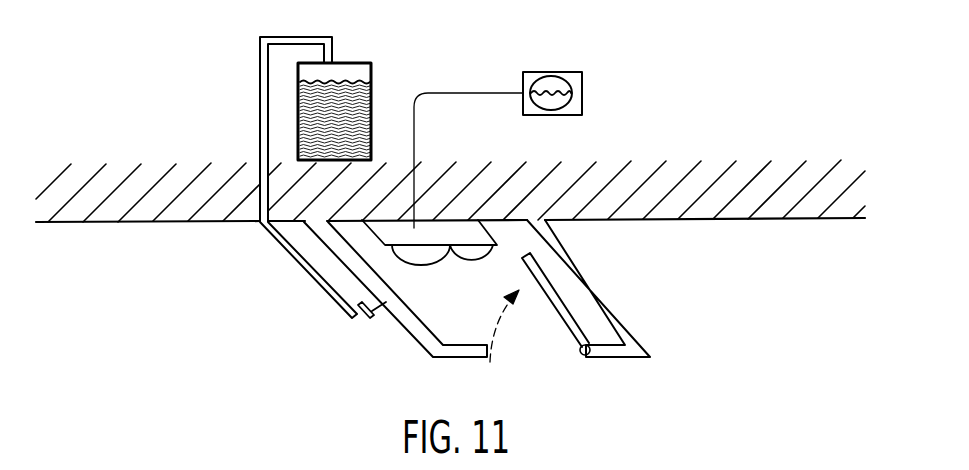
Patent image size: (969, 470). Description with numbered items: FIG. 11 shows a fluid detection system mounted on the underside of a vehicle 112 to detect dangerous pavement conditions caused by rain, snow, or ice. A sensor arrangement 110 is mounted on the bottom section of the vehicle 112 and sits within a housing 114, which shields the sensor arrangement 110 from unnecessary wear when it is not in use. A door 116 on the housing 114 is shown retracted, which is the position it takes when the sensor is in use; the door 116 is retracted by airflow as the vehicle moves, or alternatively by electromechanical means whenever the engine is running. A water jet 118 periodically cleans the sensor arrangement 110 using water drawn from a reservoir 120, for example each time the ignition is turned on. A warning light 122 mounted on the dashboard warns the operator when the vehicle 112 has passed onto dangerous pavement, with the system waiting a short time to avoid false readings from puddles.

The sensor arrangement 110 is at (438, 230).
The vehicle 112 is at (575, 175).
The housing 114 is at (323, 302).
The door 116 is at (560, 318).
The water jet 118 is at (383, 320).
The reservoir 120 is at (355, 112).
The warning light 122 is at (573, 72).